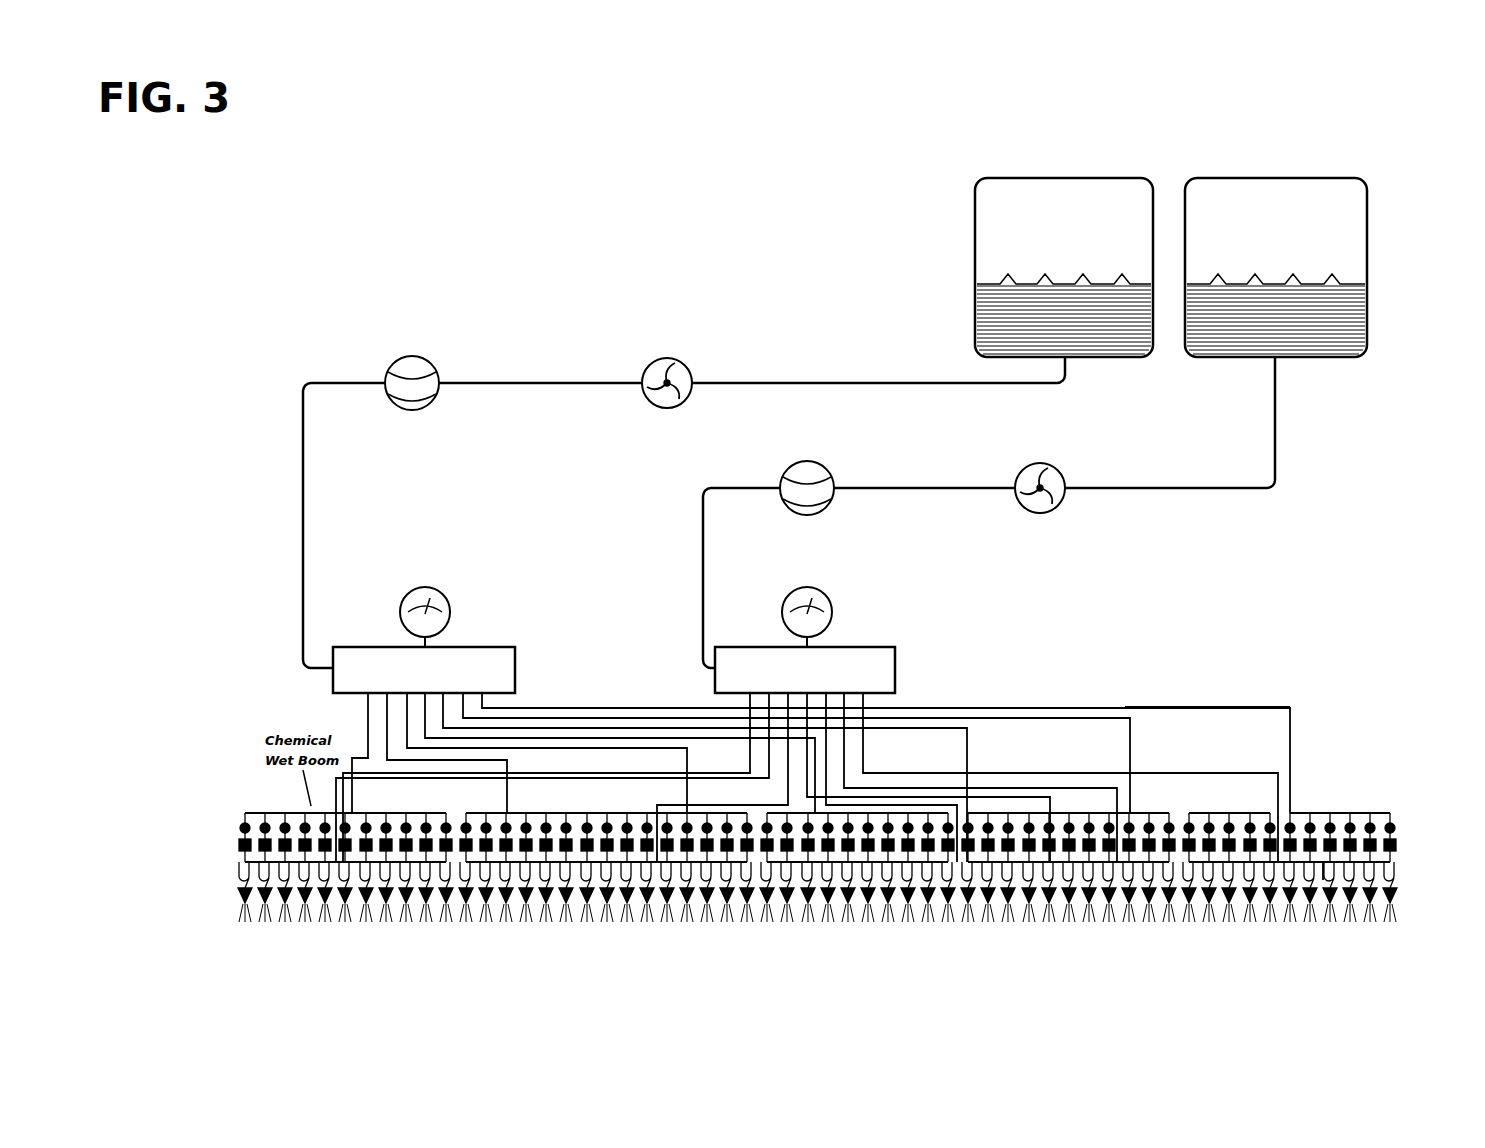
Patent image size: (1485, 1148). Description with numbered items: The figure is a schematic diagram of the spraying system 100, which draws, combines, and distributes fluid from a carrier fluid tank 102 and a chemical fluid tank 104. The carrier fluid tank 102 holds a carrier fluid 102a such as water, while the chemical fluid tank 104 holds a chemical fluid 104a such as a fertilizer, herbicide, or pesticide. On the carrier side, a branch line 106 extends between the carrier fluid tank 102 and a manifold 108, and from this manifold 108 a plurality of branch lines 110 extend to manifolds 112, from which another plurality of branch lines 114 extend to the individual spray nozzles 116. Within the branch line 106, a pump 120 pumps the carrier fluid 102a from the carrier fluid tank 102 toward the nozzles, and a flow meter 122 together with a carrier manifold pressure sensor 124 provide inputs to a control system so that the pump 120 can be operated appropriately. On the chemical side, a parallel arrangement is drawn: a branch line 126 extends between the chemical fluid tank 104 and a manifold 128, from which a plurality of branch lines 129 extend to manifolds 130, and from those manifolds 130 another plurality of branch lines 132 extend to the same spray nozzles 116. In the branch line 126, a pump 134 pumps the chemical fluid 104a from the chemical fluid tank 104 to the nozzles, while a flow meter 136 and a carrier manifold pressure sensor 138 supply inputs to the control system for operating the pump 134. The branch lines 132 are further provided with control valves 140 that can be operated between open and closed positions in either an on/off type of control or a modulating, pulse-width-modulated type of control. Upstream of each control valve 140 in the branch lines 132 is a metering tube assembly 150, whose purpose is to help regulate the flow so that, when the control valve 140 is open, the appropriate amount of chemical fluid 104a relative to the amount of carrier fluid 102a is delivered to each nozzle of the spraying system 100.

The spraying system 100 is at (690, 266).
The carrier fluid tank 102 is at (1322, 195).
The carrier fluid 102a is at (1365, 333).
The chemical fluid tank 104 is at (1097, 195).
The chemical fluid 104a is at (995, 333).
The branch line 106 is at (1190, 490).
The manifold 108 is at (807, 754).
The branch lines 110 is at (1165, 772).
The manifolds 112 is at (1321, 862).
The branch lines 114 is at (1385, 876).
The spray nozzles 116 is at (1388, 898).
The pump 120 is at (1055, 505).
The flow meter 122 is at (825, 495).
The carrier manifold pressure sensor 124 is at (810, 590).
The branch line 126 is at (893, 380).
The manifold 128 is at (811, 754).
The branch lines 129 is at (1125, 707).
The manifolds 130 is at (1360, 812).
The branch lines 132 is at (1392, 862).
The pump 134 is at (663, 405).
The flow meter 136 is at (410, 405).
The carrier manifold pressure sensor 138 is at (428, 590).
The control valves 140 is at (1393, 825).
The metering tube assembly 150 is at (1397, 846).